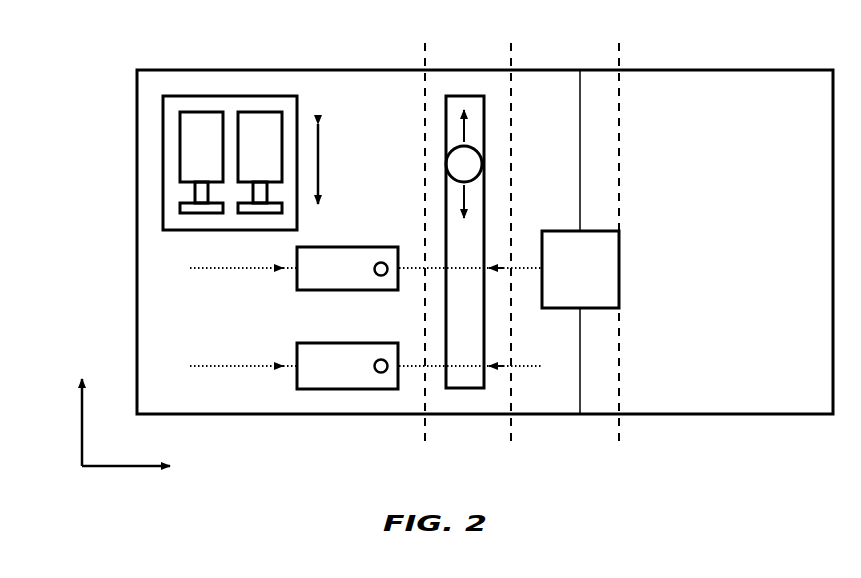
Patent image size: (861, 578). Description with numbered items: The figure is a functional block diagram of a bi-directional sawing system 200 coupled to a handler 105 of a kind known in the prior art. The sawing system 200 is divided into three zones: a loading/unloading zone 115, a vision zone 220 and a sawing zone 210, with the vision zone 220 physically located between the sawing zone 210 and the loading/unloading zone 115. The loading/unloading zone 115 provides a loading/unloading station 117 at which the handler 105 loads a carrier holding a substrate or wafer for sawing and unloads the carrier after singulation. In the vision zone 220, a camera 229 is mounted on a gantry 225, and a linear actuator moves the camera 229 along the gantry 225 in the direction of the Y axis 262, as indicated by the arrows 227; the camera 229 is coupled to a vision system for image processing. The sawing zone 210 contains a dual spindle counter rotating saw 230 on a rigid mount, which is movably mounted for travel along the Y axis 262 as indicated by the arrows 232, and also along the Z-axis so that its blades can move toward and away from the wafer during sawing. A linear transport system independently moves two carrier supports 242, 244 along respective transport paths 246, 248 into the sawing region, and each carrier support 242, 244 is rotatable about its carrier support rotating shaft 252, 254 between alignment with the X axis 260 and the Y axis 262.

The handler 105 is at (723, 76).
The loading/unloading zone 115 is at (564, 423).
The loading/unloading station 117 is at (613, 270).
The sawing system 200 is at (592, 33).
The sawing zone 210 is at (278, 423).
The vision zone 220 is at (466, 423).
The gantry 225 is at (458, 102).
The arrows 227 is at (467, 125).
The camera 229 is at (482, 157).
The dual spindle counter rotating saw 230 is at (232, 100).
The arrows 232 is at (320, 163).
The carrier support 242 is at (300, 270).
The carrier support 244 is at (300, 370).
The transport path 246 is at (207, 272).
The transport path 248 is at (207, 371).
The carrier support rotating shaft 252 is at (381, 263).
The carrier support rotating shaft 254 is at (381, 360).
The X axis 260 is at (120, 468).
The Y axis 262 is at (80, 423).